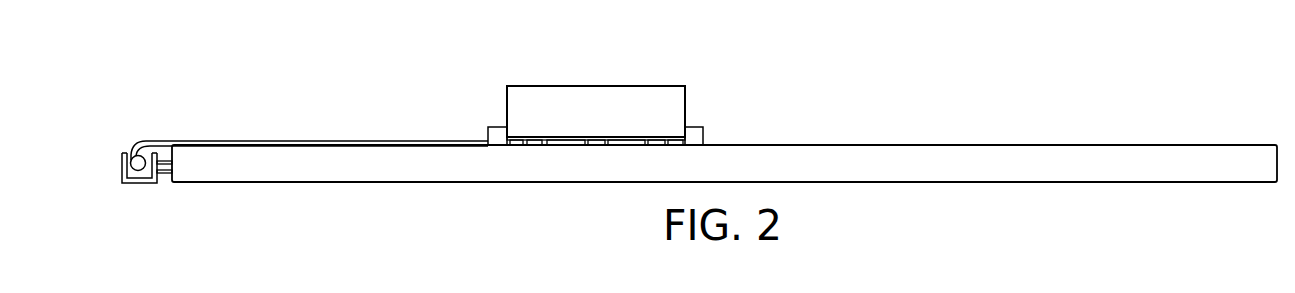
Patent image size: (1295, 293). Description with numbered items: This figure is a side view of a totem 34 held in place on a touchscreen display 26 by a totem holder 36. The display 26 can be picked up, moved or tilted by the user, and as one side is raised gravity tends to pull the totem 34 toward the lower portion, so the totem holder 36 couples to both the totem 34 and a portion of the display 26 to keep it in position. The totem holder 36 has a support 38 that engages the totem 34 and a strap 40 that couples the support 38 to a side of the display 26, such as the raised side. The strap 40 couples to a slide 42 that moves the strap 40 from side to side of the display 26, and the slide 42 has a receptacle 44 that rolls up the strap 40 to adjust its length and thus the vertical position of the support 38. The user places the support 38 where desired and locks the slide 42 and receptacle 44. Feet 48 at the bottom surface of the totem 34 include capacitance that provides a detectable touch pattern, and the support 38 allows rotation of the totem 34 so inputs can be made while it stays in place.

The touchscreen display 26 is at (1000, 145).
The totem 34 is at (593, 97).
The totem holder 36 is at (128, 127).
The support 38 is at (703, 136).
The strap 40 is at (213, 141).
The slide 42 is at (141, 168).
The receptacle 44 is at (122, 167).
The feet 48 is at (594, 147).